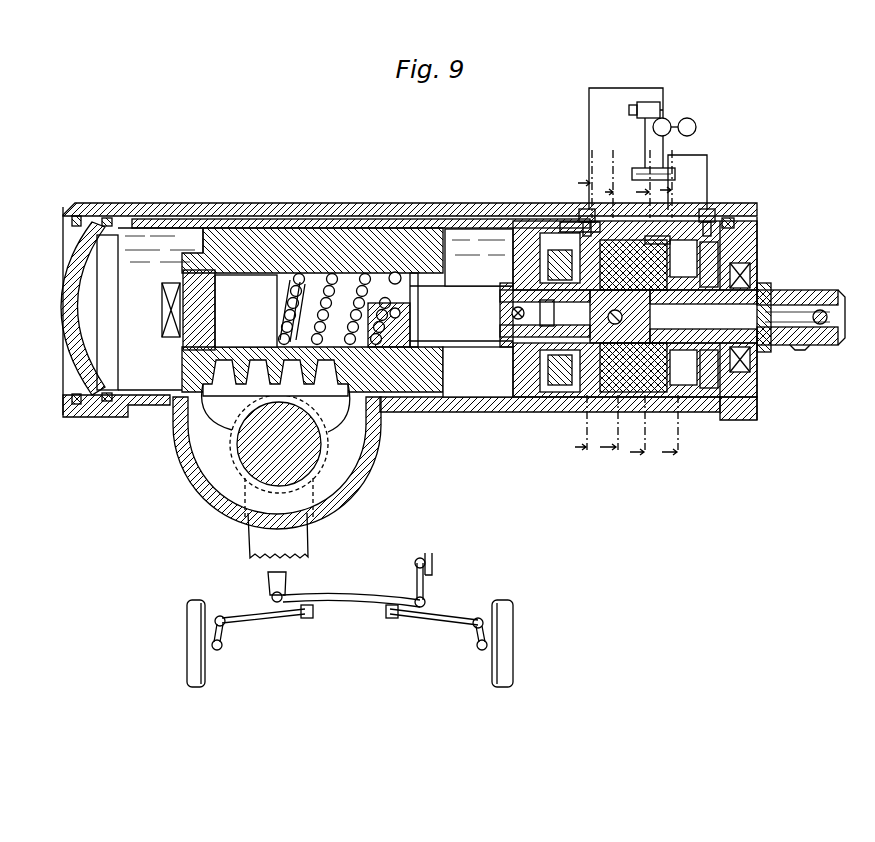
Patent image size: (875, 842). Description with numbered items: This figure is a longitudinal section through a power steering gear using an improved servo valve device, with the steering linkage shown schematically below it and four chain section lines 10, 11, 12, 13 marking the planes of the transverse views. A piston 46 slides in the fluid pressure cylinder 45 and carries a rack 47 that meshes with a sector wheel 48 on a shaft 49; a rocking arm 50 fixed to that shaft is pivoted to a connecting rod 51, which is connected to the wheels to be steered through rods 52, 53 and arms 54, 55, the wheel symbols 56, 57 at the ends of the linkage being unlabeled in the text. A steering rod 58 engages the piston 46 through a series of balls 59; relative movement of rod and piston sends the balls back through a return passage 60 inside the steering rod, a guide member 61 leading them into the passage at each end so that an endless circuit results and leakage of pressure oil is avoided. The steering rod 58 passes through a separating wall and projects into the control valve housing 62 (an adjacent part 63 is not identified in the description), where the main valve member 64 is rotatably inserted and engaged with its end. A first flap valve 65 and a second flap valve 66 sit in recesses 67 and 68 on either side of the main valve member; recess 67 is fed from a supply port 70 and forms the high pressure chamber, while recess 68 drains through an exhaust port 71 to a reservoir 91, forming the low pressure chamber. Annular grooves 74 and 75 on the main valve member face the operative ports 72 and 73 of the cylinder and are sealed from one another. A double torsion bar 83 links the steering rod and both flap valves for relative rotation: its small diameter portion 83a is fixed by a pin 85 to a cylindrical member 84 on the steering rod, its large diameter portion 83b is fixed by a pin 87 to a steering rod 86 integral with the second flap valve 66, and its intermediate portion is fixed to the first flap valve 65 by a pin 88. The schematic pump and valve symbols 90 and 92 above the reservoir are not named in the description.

The section line 10— 10 is at (595, 303).
The section line 11— 11 is at (622, 308).
The section line 12— 12 is at (648, 305).
The section line 13— 13 is at (678, 305).
The fluid pressure cylinder 45 is at (477, 405).
The piston 46 is at (428, 400).
The rack 47 is at (160, 420).
The sector wheel 48 is at (233, 403).
The shaft 49 is at (307, 447).
The rocking arm 50 is at (293, 543).
The connecting rod 51 is at (355, 598).
The rod 52 is at (303, 616).
The rod 53 is at (395, 616).
The arm 54 is at (222, 635).
The arm 55 is at (480, 636).
The wheel 56 is at (200, 660).
The wheel 57 is at (500, 655).
The steering rod 58 is at (458, 300).
The balls 59 is at (393, 268).
The return passage 60 is at (425, 285).
The guide member 61 is at (305, 325).
The control valve housing 62 is at (548, 410).
The valve housing 63 is at (520, 405).
The main valve member 64 is at (762, 245).
The first flap valve 65 is at (568, 222).
The second flap valve 66 is at (760, 280).
The recess 67 is at (612, 245).
The recess 68 is at (712, 212).
The supply port 70 is at (583, 210).
The exhaust port 71 is at (733, 222).
The operative port 72 is at (617, 400).
The operative port 73 is at (661, 218).
The annular groove 74 is at (645, 412).
The annular groove 75 is at (675, 405).
The double torsion bar 83 is at (768, 332).
The resilient portion of small diameter 83a is at (543, 405).
The resilient portion of large diameter 83b is at (760, 393).
The cylindrical member 84 is at (490, 285).
The pin 85 is at (512, 340).
The steering rod 86 is at (778, 292).
The pin 87 is at (823, 313).
The pin 88 is at (687, 407).
The pump 90 is at (688, 118).
The reservoir 91 is at (634, 168).
The valve 92 is at (650, 103).